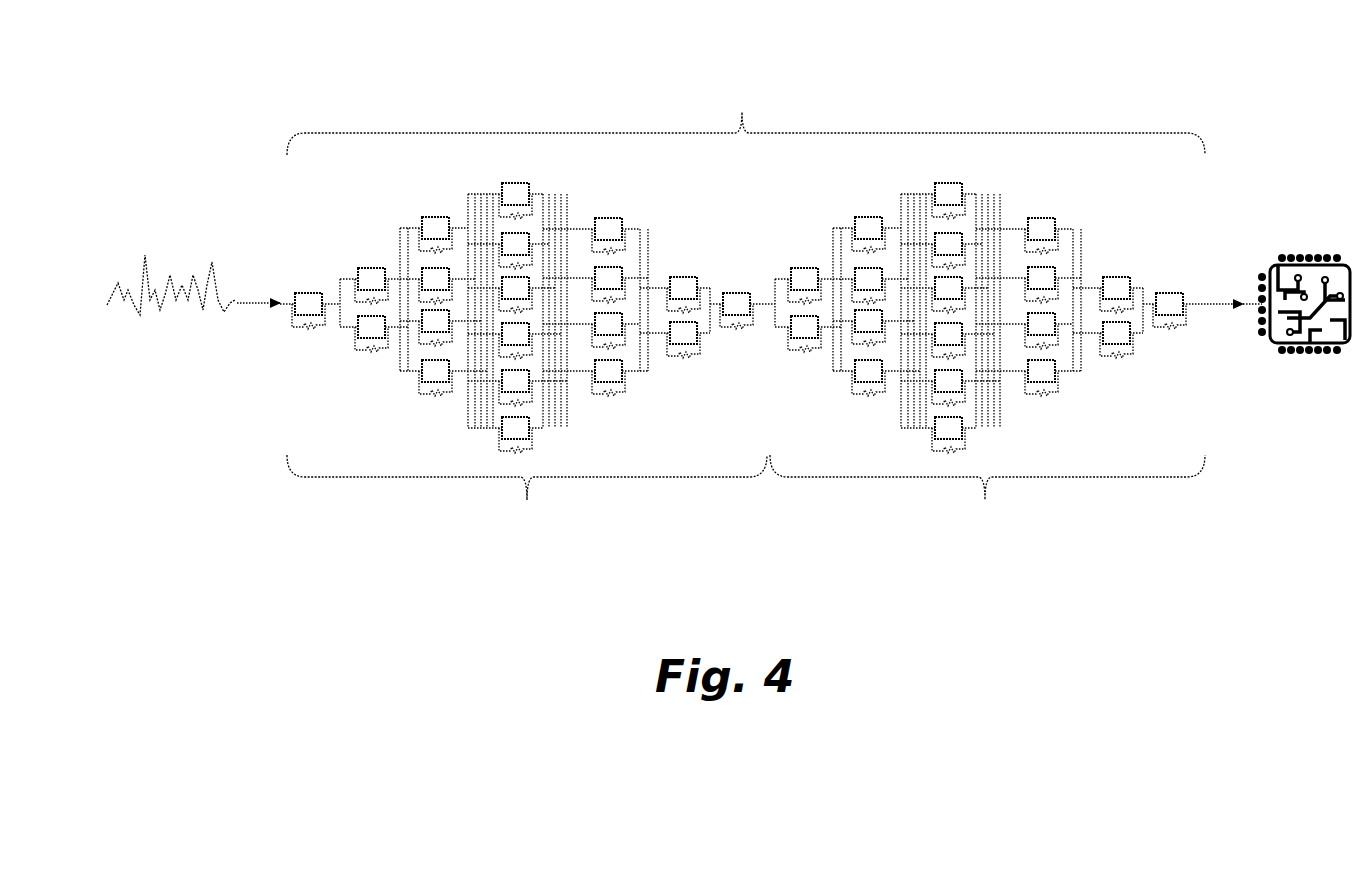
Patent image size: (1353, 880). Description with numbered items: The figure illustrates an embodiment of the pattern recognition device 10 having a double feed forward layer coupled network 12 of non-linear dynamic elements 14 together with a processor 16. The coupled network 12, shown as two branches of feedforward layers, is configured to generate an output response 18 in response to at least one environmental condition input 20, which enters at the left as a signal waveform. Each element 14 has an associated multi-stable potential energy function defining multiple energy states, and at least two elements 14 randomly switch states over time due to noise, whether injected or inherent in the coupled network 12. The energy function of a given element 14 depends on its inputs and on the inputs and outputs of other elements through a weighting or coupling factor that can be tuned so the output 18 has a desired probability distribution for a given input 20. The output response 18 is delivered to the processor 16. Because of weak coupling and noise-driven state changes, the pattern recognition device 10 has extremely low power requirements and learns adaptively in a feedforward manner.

The pattern recognition device 10 is at (376, 77).
The coupled network 12 is at (746, 313).
The non-linear dynamic elements 14 is at (805, 268).
The processor 16 is at (1298, 262).
The output response 18 is at (1208, 300).
The environmental condition input 20 is at (167, 236).